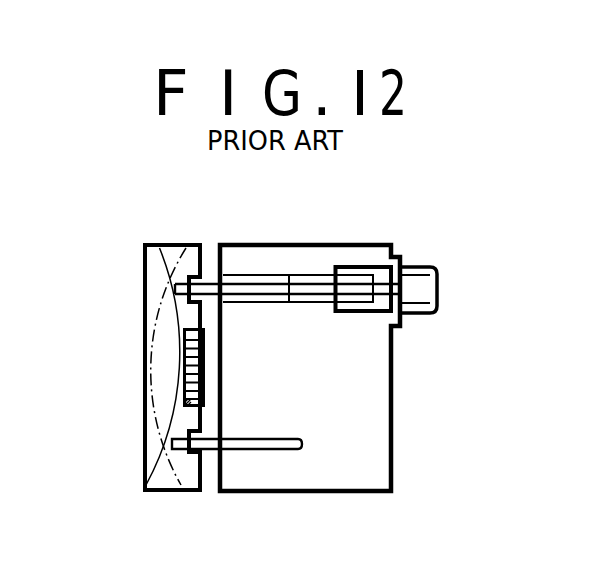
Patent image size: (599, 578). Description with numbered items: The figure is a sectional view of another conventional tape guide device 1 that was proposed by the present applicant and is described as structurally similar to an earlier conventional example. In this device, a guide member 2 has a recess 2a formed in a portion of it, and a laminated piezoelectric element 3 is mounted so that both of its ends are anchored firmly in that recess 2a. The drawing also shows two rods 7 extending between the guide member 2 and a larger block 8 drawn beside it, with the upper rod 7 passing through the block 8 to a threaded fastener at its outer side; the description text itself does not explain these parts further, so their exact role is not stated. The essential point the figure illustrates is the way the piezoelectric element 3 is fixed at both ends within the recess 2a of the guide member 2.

The adjusting screw 1 is at (450, 322).
The guide member 2 is at (143, 375).
The recess 2a is at (183, 397).
The laminated piezoelectric element 3 is at (185, 342).
The guide rods 7 is at (205, 284).
The fixed base block 8 is at (380, 432).